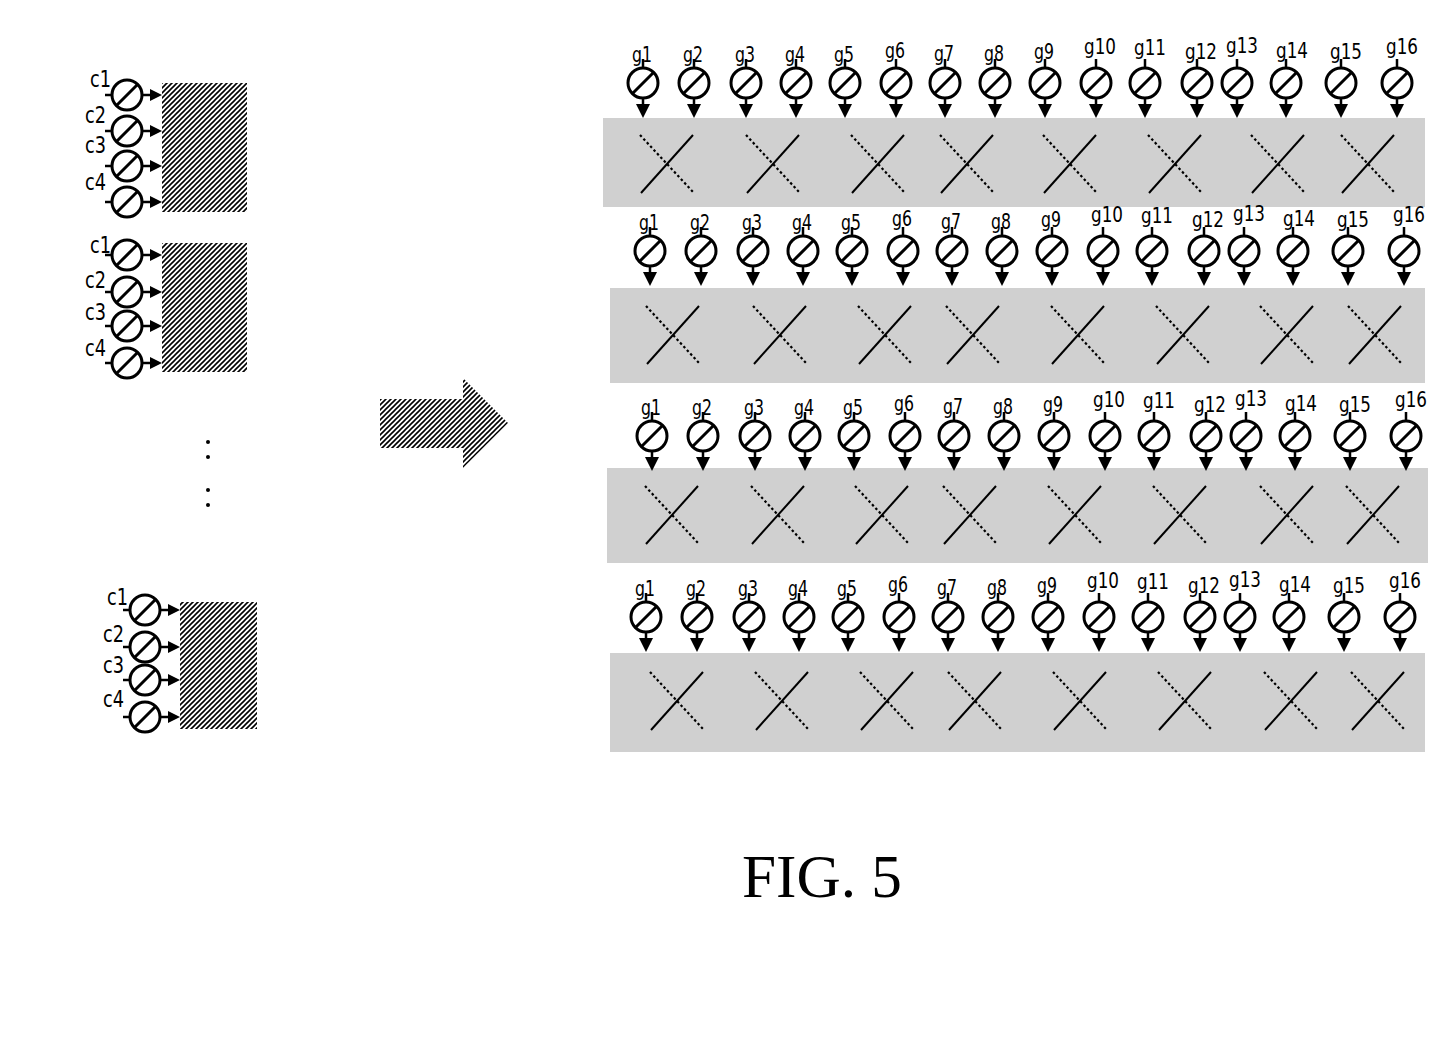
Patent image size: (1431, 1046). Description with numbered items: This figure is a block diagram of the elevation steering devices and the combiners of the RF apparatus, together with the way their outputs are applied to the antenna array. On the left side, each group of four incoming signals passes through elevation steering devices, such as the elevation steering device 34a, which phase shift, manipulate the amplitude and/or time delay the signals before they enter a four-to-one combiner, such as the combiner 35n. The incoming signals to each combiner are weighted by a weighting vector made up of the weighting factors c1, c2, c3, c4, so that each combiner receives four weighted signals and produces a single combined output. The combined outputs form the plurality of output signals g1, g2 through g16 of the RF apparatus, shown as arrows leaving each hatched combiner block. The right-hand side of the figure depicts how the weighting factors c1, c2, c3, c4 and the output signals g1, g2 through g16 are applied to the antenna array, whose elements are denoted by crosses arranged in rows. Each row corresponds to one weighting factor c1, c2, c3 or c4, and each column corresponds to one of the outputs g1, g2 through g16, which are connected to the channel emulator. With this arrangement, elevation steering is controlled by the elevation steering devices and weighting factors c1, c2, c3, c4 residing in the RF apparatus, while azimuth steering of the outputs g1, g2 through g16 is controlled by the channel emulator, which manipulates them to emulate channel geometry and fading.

The elevation steering device 34a is at (136, 66).
The combiner 35n is at (137, 737).
The output signal g1 is at (247, 145).
The output signal g2 is at (247, 307).
The output signal g16 is at (257, 662).
The weighting factor c1 is at (596, 165).
The weighting factor c2 is at (596, 333).
The weighting factor c3 is at (596, 512).
The weighting factor c4 is at (597, 698).